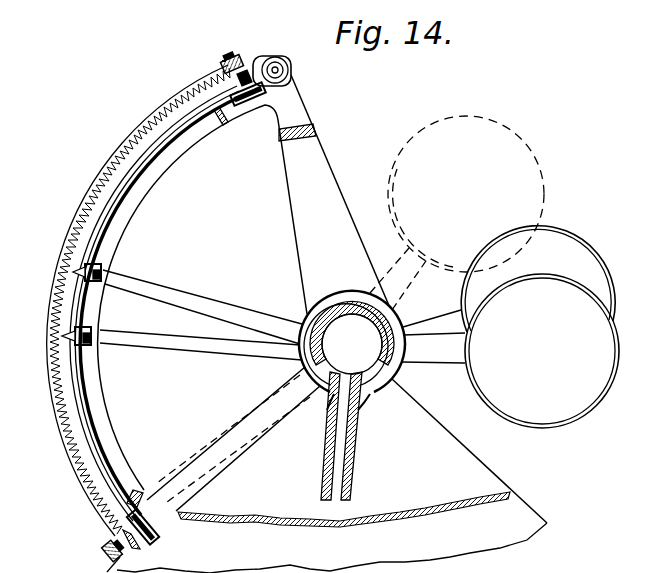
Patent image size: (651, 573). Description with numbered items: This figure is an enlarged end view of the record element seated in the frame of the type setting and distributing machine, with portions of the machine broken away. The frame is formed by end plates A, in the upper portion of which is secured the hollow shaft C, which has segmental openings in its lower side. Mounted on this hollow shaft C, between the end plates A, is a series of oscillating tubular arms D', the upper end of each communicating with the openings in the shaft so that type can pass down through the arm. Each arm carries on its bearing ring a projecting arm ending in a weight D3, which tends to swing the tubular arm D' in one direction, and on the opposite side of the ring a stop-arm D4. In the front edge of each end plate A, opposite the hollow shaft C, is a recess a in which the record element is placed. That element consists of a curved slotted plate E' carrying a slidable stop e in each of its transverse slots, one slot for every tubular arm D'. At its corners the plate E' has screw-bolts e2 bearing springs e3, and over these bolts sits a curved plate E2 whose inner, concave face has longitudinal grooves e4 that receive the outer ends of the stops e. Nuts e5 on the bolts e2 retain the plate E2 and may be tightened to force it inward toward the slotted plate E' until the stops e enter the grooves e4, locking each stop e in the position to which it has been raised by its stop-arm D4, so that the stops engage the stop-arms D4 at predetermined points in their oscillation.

The curved plate E2 is at (62, 257).
The longitudinal grooves e4 is at (56, 352).
The curved slotted plate E' is at (161, 305).
The stop-arm D4 is at (183, 295).
The slidable stop e is at (101, 268).
The hollow shaft C is at (366, 335).
The oscillating tubular arm D' is at (352, 436).
The weight D3 is at (494, 272).
The spring e3 is at (253, 67).
The screw-bolt e2 is at (238, 50).
The nut e5 is at (222, 62).
The recess a is at (266, 89).
The end plate A is at (332, 532).